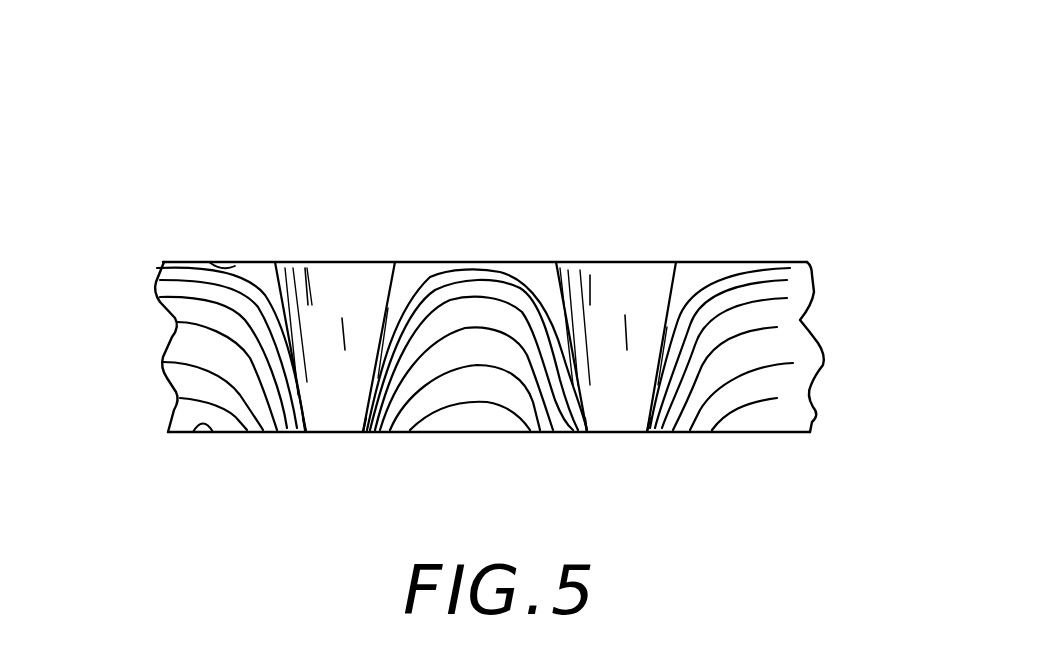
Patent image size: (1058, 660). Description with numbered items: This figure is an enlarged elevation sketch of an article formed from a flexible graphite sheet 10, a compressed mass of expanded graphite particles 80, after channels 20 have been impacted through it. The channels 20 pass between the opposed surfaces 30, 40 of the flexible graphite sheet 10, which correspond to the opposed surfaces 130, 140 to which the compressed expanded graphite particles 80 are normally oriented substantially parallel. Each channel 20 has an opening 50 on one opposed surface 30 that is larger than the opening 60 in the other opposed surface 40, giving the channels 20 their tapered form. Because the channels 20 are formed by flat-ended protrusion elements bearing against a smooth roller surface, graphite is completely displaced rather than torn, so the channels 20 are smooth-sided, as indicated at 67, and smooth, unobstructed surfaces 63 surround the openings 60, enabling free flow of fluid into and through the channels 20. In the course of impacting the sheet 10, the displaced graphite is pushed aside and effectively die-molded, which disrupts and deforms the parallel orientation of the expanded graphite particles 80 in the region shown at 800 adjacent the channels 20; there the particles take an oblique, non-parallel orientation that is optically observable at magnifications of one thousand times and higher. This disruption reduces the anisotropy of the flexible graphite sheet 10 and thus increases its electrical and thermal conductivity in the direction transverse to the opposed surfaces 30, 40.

The flexible graphite sheet 10 is at (215, 187).
The channels 20 is at (335, 277).
The opposed surface 30 is at (463, 262).
The opposed surface 40 is at (490, 433).
The openings 50 is at (372, 262).
The openings 60 is at (332, 437).
The smooth, unobstructed surfaces 63 is at (300, 433).
The smooth sides 67 is at (288, 351).
The compressed expanded graphite particles 80 is at (185, 271).
The opposed surface 130 is at (209, 262).
The opposed surface 140 is at (192, 432).
The region of disrupted particle orientation 800 is at (181, 309).